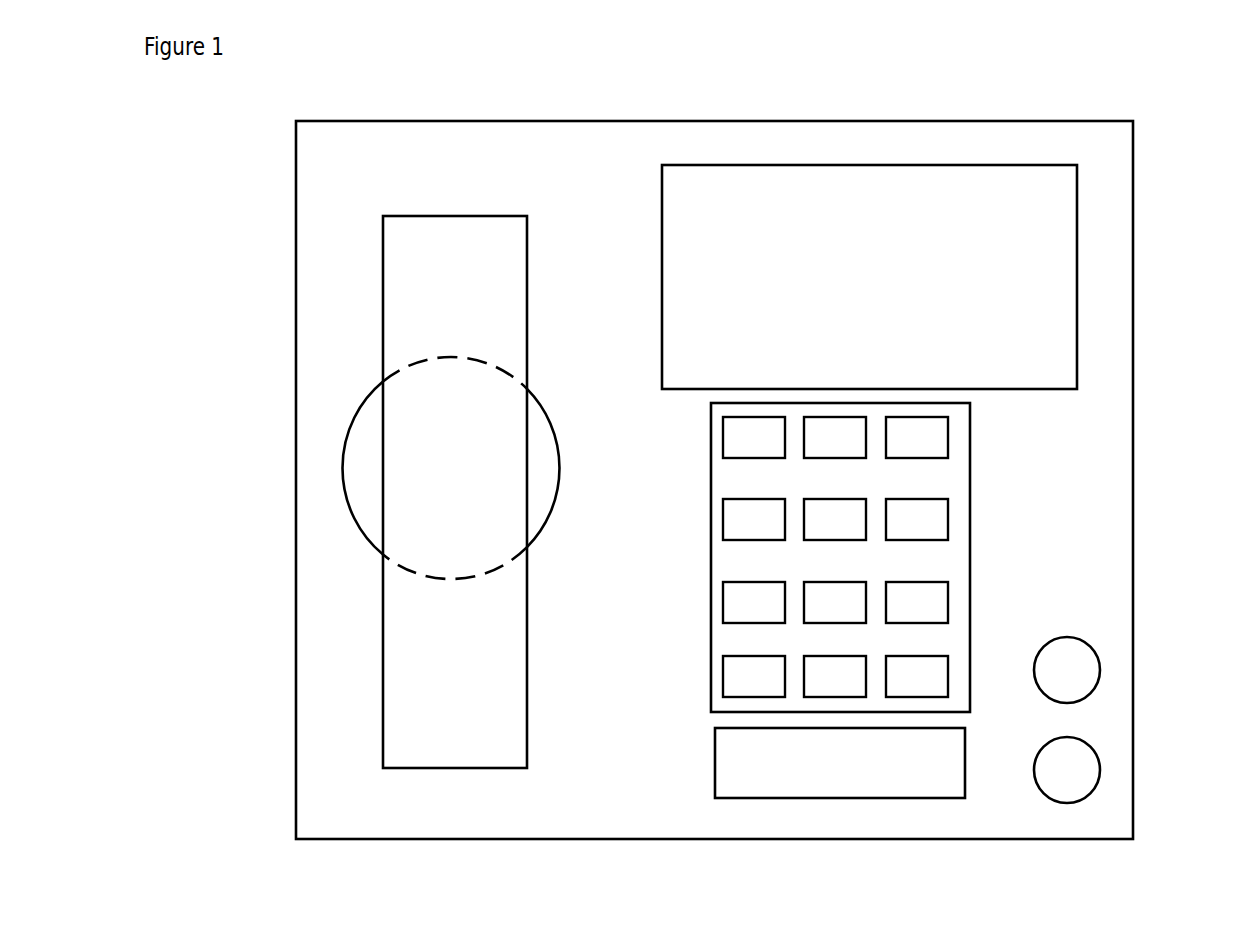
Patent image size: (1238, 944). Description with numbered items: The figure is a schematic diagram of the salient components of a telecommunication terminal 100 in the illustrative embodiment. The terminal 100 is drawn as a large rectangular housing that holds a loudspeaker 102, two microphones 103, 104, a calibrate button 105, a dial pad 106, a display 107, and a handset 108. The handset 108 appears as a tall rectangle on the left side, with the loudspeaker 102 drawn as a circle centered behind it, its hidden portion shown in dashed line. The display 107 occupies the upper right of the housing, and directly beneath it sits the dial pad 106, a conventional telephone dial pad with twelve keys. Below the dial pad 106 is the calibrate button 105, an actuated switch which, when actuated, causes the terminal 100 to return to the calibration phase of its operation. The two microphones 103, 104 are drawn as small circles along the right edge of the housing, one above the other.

The telecommunication terminal 100 is at (296, 402).
The loudspeaker 102 is at (558, 447).
The microphone 103 is at (1098, 753).
The microphone 104 is at (1098, 652).
The calibrate button 105 is at (847, 798).
The dial pad 106 is at (970, 492).
The display 107 is at (973, 165).
The handset 108 is at (527, 252).